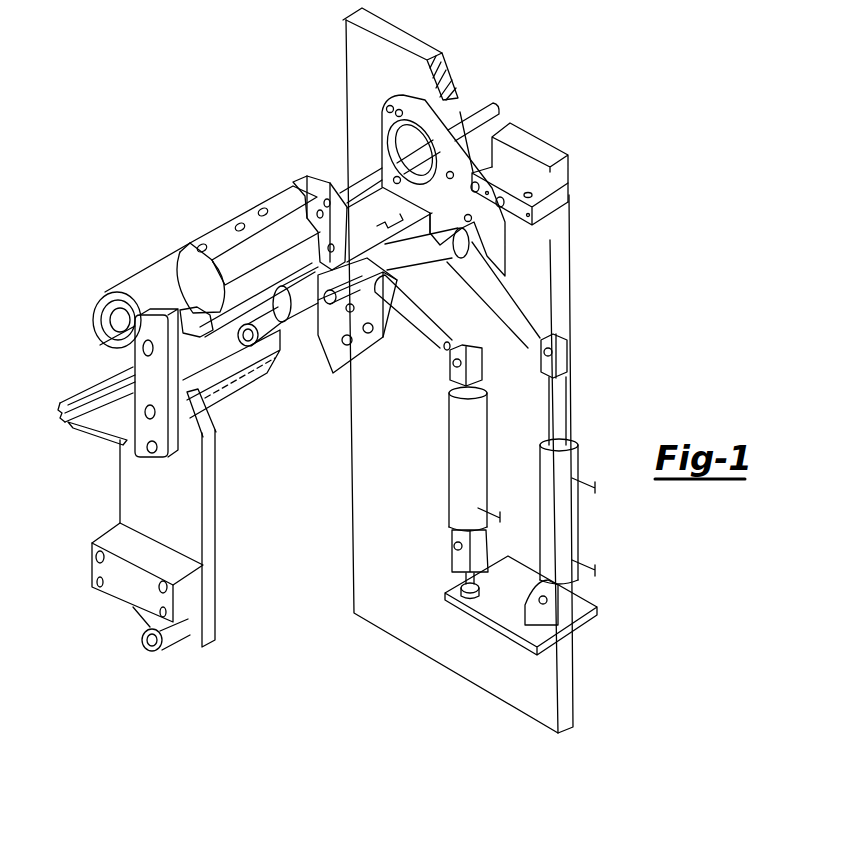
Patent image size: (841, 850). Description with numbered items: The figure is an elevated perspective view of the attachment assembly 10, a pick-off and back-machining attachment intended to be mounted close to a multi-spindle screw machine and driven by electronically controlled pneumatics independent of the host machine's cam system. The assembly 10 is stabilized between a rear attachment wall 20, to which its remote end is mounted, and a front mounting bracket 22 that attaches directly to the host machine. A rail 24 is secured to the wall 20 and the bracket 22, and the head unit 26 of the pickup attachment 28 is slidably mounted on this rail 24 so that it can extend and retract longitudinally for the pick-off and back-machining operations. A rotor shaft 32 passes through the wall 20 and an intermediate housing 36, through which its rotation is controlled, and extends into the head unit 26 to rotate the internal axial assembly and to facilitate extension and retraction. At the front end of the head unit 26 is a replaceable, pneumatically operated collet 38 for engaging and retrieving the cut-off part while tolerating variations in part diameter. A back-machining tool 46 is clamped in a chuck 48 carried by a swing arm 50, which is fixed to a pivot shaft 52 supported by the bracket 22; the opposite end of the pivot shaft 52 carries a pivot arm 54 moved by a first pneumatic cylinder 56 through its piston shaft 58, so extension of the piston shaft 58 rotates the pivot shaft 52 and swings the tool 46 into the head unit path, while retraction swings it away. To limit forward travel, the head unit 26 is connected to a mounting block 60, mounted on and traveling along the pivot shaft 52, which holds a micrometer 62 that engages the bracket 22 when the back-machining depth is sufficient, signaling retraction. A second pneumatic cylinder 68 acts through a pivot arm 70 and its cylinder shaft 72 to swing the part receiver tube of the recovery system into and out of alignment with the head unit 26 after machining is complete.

The attachment assembly 10 is at (212, 150).
The rear attachment wall 20 is at (538, 248).
The front mounting bracket 22 is at (193, 533).
The rail 24 is at (99, 378).
The head unit 26 is at (148, 268).
The pickup attachment 28 is at (330, 160).
The rotor shaft 32 is at (483, 110).
The intermediate housing 36 is at (440, 108).
The pneumatically operated collet 38 is at (97, 302).
The tool 46 is at (190, 300).
The chuck 48 is at (197, 400).
The swing arm 50 is at (138, 393).
The pivot shaft 52 is at (247, 400).
The pivot arm 54 is at (532, 305).
The first pneumatic cylinder 56 is at (570, 512).
The piston shaft 58 is at (558, 398).
The mounting block 60 is at (333, 353).
The micrometer 62 is at (287, 327).
The second pneumatic cylinder 68 is at (453, 488).
The pivot arm 70 is at (420, 318).
The cylinder shaft 72 is at (447, 391).